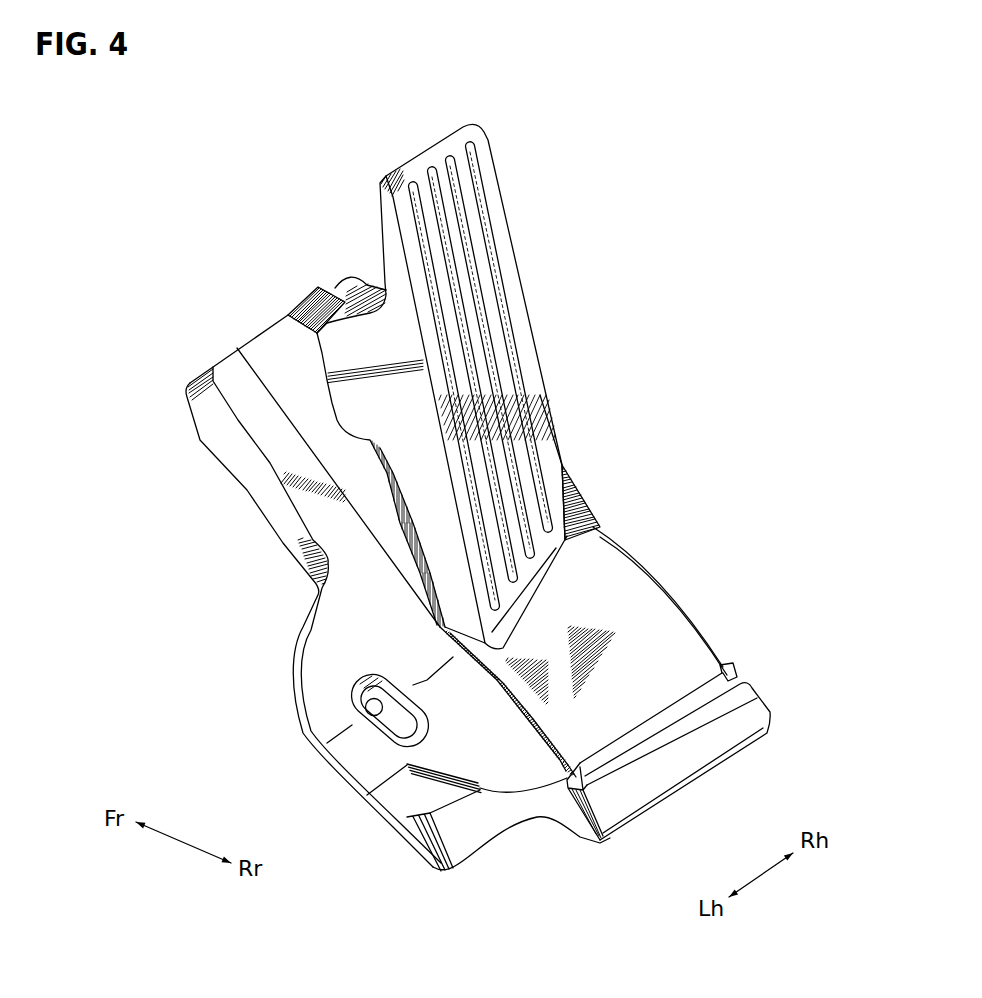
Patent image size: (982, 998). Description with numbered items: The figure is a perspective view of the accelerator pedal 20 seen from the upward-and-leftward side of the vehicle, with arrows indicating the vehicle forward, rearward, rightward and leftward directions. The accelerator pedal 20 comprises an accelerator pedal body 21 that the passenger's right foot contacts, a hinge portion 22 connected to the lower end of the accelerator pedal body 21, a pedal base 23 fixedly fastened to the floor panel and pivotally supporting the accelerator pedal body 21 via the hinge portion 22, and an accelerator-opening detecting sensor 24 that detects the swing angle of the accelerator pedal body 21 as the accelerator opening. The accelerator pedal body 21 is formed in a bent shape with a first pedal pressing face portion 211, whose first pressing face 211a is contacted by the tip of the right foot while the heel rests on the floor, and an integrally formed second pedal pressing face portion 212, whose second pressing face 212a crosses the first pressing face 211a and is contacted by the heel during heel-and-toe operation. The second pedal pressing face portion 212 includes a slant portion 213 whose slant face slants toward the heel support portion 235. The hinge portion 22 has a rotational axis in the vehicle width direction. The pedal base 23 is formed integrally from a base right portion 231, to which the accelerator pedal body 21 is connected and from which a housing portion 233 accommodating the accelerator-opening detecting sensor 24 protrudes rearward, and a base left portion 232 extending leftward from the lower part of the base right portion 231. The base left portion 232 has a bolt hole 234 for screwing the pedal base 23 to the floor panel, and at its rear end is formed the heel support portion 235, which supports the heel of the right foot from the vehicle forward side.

The accelerator pedal 20 is at (105, 173).
The accelerator pedal body 21 is at (492, 140).
The first pedal pressing face portion 211 is at (532, 322).
The first pressing face 211a is at (535, 402).
The second pedal pressing face portion 212 is at (668, 588).
The second pressing face 212a is at (612, 593).
The slant portion 213 is at (563, 553).
The hinge portion 22 is at (731, 663).
The pedal base 23 is at (197, 425).
The base right portion 231 is at (745, 745).
The base left portion 232 is at (300, 664).
The housing portion 233 is at (272, 337).
The bolt hole 234 is at (350, 694).
The heel support portion 235 is at (457, 825).
The accelerator-opening detecting sensor 24 is at (349, 277).